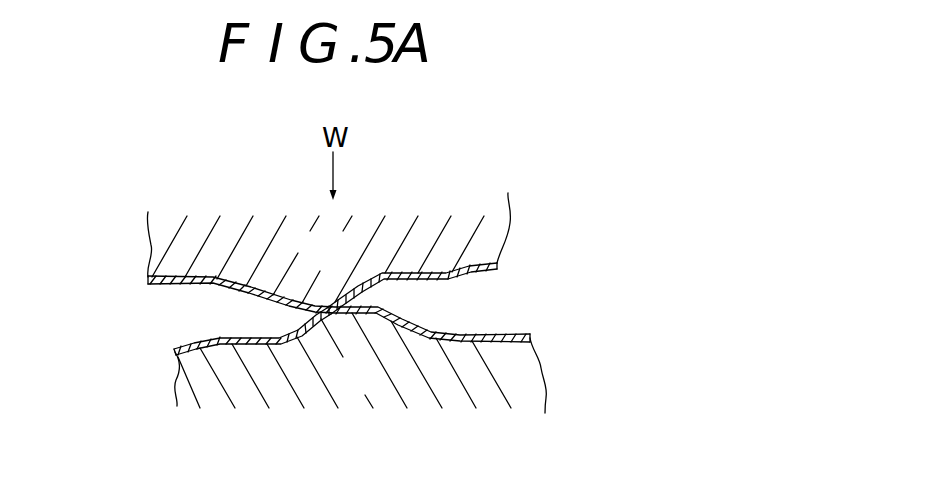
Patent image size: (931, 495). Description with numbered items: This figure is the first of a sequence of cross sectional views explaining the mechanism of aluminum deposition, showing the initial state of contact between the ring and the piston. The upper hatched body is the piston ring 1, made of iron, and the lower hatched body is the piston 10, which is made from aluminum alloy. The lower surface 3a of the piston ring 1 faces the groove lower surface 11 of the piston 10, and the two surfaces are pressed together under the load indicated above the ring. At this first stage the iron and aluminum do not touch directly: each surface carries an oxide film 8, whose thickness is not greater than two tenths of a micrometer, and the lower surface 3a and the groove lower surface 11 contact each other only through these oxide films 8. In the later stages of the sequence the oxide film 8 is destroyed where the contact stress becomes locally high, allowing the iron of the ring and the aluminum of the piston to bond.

The piston ring 1 is at (485, 233).
The oxide film 8 is at (148, 280).
The piston 10 is at (520, 386).
The groove lower surface 11 is at (222, 339).
The lower surface 3a is at (425, 280).